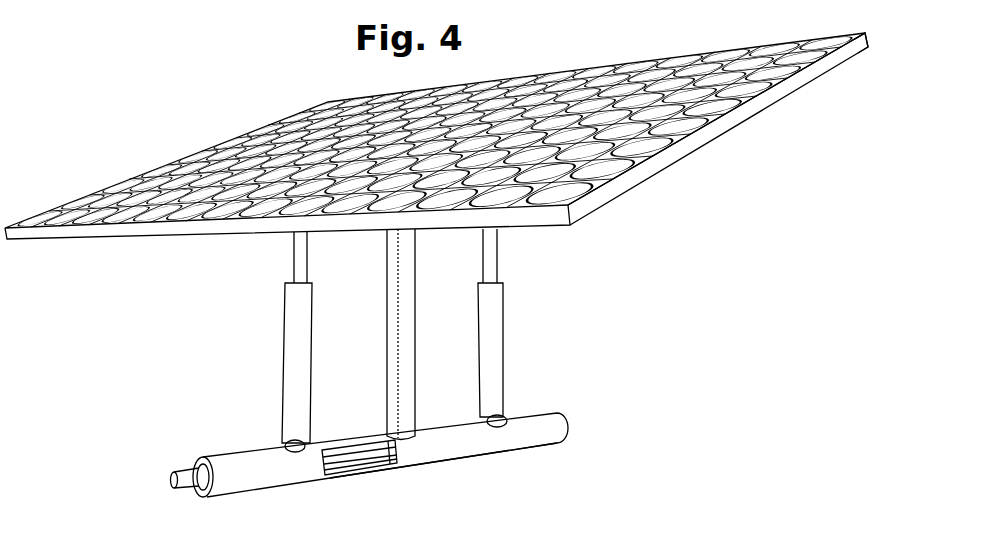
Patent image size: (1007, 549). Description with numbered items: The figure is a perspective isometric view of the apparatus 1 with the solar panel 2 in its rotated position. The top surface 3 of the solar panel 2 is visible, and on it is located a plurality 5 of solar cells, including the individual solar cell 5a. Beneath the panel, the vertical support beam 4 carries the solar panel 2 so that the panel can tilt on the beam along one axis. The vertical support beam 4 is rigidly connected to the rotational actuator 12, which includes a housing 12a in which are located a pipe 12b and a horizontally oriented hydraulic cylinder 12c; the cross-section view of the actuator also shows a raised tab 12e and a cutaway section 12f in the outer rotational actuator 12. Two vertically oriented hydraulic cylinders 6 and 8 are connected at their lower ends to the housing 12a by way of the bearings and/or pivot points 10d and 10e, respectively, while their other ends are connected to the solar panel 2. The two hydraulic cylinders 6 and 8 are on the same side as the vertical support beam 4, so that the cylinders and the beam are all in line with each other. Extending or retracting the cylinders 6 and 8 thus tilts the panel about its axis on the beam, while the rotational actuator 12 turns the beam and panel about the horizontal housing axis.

The apparatus 1 is at (665, 52).
The solar panel 2 is at (860, 42).
The top surface 3 is at (750, 50).
The vertical support beam 4 is at (393, 273).
The plurality of solar cells 5 is at (517, 80).
The solar cell 5a is at (328, 100).
The vertically oriented hydraulic cylinder 6 is at (295, 320).
The vertically oriented hydraulic cylinder 8 is at (492, 310).
The bearing and/or pivot point 10d is at (292, 444).
The bearing and/or pivot point 10e is at (500, 422).
The rotational actuator 12 is at (553, 448).
The housing 12a is at (508, 445).
The pipe 12b is at (185, 480).
The horizontally oriented hydraulic cylinder 12c is at (353, 458).
The raised tab 12e is at (337, 462).
The cutaway section 12f is at (397, 463).